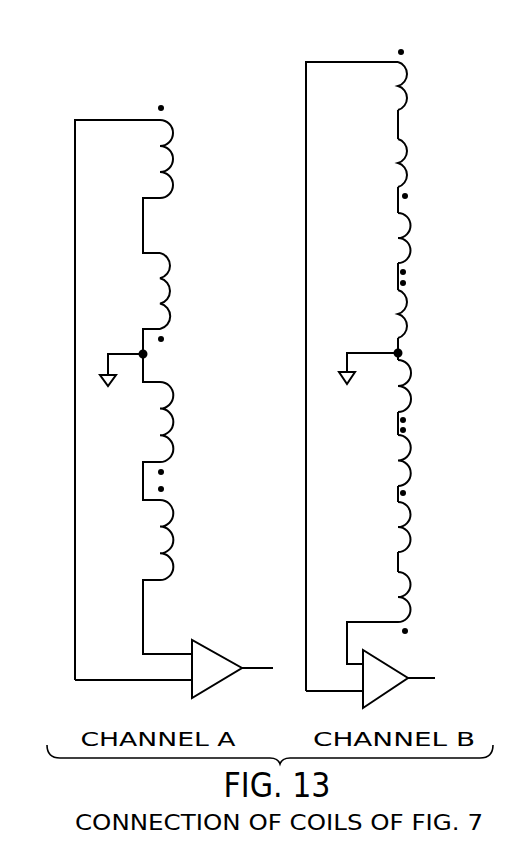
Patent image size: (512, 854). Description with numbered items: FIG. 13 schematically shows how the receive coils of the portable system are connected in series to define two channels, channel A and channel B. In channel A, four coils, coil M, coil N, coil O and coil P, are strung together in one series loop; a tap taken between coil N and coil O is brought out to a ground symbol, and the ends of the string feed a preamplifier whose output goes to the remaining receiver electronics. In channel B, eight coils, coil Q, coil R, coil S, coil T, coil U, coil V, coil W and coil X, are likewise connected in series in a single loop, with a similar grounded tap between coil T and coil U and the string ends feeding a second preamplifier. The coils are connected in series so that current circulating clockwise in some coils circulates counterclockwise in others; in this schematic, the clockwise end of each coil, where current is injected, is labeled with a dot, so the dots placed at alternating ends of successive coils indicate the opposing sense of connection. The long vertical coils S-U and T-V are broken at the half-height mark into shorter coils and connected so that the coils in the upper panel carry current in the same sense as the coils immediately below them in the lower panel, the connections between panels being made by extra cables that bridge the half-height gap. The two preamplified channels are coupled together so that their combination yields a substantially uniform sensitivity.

The coil M is at (138, 159).
The coil N is at (135, 291).
The coil O is at (139, 422).
The coil P is at (142, 540).
The coil Q is at (376, 86).
The coil R is at (378, 163).
The coil S is at (379, 238).
The coil T is at (379, 314).
The coil U is at (383, 386).
The coil V is at (380, 460).
The coil W is at (379, 527).
The coil X is at (382, 597).